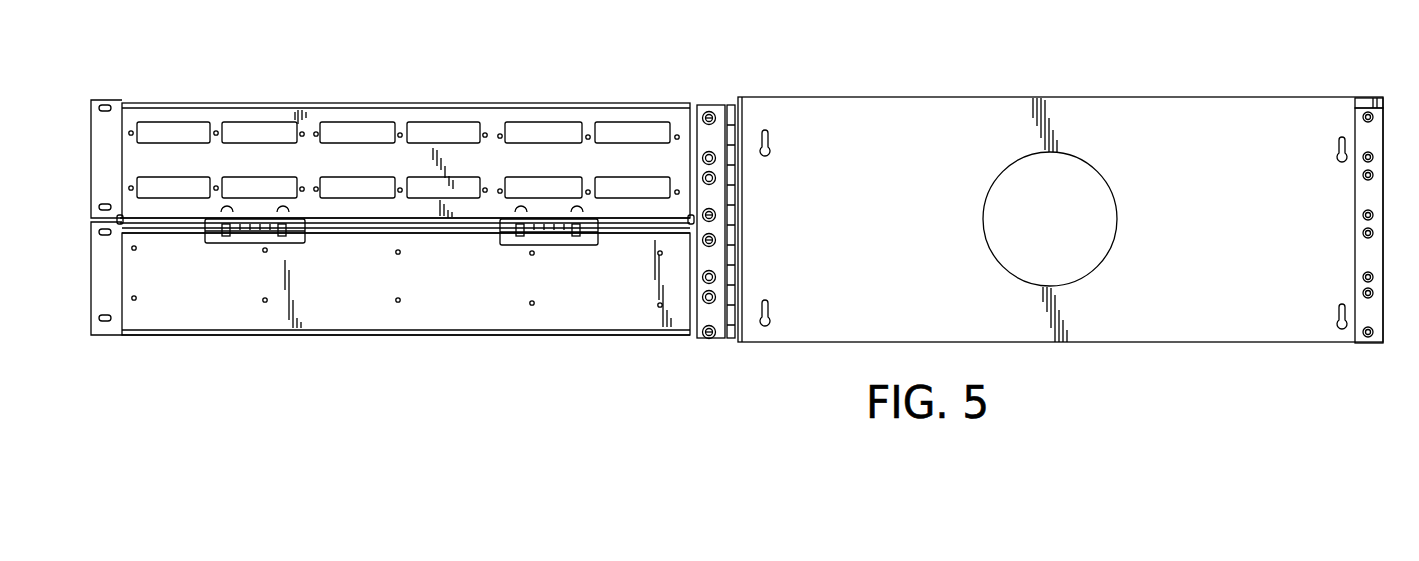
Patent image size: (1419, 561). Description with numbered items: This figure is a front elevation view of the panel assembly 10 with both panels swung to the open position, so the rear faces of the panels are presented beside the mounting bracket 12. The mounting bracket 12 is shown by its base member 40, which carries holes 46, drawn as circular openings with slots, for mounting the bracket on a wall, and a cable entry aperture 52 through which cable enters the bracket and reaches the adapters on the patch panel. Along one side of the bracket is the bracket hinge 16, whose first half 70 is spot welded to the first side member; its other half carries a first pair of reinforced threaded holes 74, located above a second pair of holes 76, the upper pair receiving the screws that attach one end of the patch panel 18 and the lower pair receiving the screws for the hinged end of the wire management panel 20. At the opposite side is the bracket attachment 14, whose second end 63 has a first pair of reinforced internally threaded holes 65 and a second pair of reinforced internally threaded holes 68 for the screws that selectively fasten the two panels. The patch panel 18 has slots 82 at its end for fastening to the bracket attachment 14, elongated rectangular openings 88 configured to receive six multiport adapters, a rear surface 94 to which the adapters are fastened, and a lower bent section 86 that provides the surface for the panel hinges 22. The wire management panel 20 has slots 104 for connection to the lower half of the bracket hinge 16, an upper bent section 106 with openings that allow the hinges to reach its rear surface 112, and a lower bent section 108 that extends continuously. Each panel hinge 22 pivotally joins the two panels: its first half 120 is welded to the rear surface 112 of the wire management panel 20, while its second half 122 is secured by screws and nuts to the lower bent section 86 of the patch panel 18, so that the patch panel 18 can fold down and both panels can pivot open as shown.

The panel assembly 10 is at (528, 45).
The mounting bracket 12 is at (1017, 95).
The bracket attachment 14 is at (1384, 108).
The bracket hinge 16 is at (718, 101).
The patch panel 18 is at (314, 104).
The wire management panel 20 is at (500, 312).
The panel hinge 22 is at (305, 247).
The base member 40 is at (1173, 151).
The holes 46 is at (778, 140).
The cable entry aperture 52 is at (993, 185).
The second end 63 is at (1355, 258).
The first pair of reinforced internally threaded holes 65 is at (1366, 112).
The second pair of reinforced internally threaded holes 68 is at (1362, 236).
The first half 70 is at (714, 258).
The first pair of reinforced threaded holes 74 is at (708, 111).
The second pair of holes 76 is at (716, 240).
The slots 82 is at (105, 113).
The lower bent section 86 is at (160, 216).
The rectangular openings 88 is at (190, 128).
The rear surface 94 is at (353, 162).
The slots 104 is at (105, 237).
The upper bent section 106 is at (433, 233).
The lower bent section 108 is at (258, 337).
The rear surface 112 is at (407, 291).
The first half 120 is at (218, 245).
The second half 122 is at (258, 222).